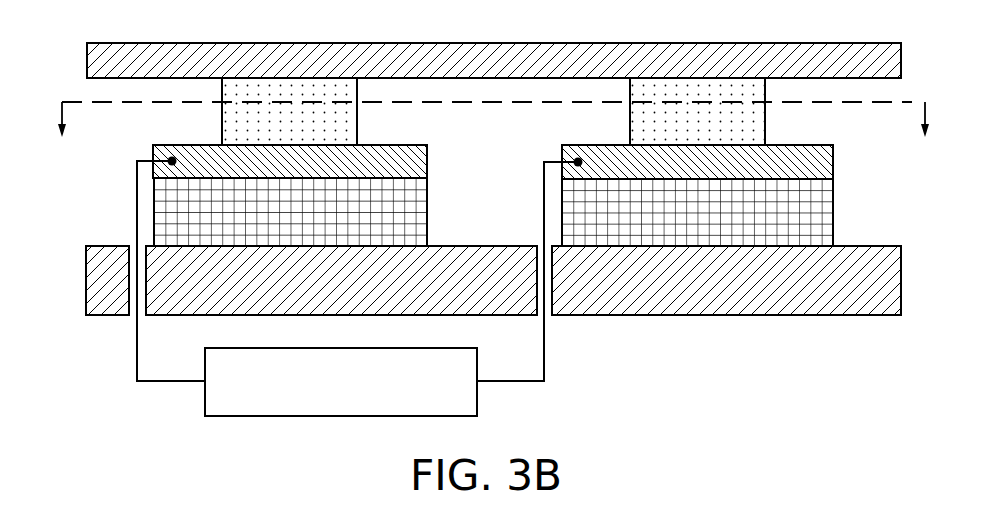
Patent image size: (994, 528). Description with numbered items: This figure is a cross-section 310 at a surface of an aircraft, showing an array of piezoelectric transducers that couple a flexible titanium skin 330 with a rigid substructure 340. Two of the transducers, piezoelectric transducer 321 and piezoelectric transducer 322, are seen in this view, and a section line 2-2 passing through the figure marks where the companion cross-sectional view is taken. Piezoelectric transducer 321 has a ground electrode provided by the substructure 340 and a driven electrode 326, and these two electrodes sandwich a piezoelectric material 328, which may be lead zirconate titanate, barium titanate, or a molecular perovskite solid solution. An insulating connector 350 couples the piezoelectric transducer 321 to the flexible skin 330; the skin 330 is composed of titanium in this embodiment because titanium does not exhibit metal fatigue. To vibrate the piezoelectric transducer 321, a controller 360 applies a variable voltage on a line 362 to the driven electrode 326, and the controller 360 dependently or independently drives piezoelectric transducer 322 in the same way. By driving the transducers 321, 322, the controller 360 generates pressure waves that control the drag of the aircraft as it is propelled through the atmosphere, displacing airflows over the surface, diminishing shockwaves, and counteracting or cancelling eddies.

The cross-section 310 is at (48, 52).
The flexible titanium skin 330 is at (130, 43).
The insulating connector 350 is at (307, 133).
The piezoelectric transducer 321 is at (442, 141).
The piezoelectric transducer 322 is at (544, 141).
The driven electrode 326 is at (203, 145).
The piezoelectric material 328 is at (428, 221).
The rigid substructure 340 is at (107, 246).
The controller 360 is at (256, 348).
The line 362 is at (178, 381).
The section line 2- 2 is at (494, 119).